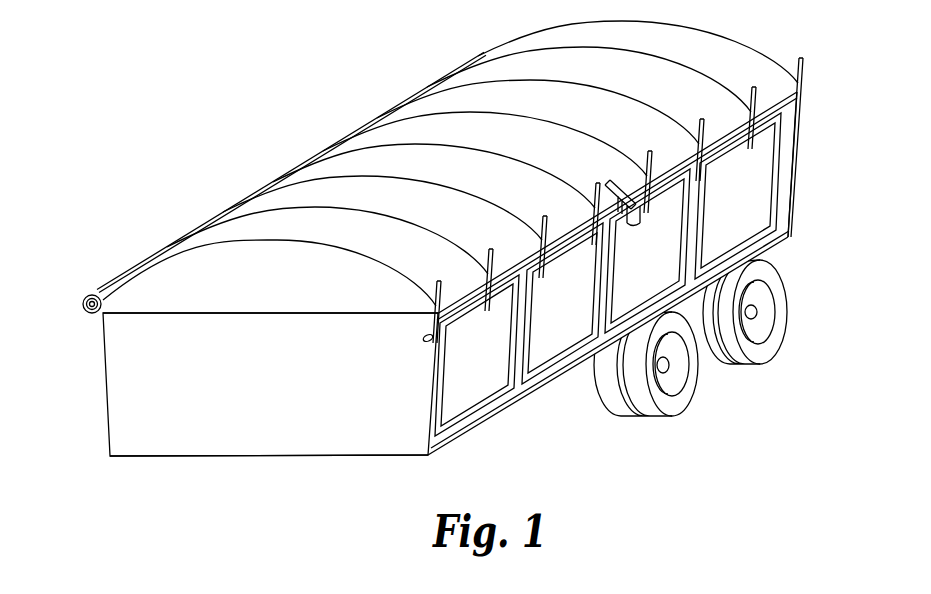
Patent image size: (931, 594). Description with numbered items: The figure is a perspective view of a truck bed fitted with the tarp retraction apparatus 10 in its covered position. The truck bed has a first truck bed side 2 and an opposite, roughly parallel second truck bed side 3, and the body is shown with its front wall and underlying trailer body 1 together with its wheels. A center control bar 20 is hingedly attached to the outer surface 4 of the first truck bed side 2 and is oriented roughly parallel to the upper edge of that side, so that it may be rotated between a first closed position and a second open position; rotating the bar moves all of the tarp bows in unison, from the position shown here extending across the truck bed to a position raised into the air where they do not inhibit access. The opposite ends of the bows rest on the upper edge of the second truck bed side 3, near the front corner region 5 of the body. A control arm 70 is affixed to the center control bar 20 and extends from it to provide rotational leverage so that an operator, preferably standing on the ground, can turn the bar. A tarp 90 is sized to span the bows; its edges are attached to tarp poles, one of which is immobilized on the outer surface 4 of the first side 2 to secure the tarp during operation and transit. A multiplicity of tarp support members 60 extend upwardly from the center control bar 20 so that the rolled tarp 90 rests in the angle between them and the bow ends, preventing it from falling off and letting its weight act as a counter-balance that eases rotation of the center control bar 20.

The tarp retraction apparatus 10 is at (224, 92).
The tarp 90 is at (210, 219).
The front wall top edge 5 is at (102, 353).
The second truck bed side 3 is at (102, 365).
The trailer body 1 is at (358, 457).
The first truck bed side 2 is at (485, 364).
The center control bar 20 is at (459, 325).
The outer surface 4 is at (581, 321).
The control arm 70 is at (640, 217).
The tarp support members 60 is at (802, 72).